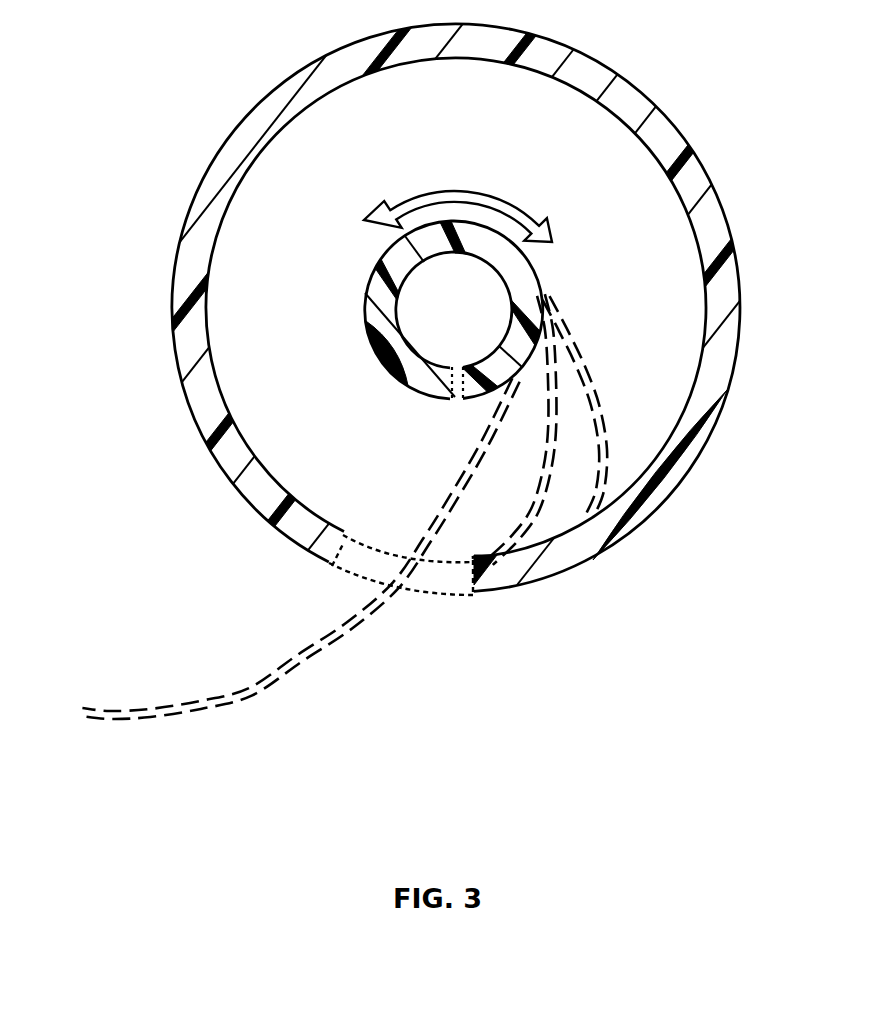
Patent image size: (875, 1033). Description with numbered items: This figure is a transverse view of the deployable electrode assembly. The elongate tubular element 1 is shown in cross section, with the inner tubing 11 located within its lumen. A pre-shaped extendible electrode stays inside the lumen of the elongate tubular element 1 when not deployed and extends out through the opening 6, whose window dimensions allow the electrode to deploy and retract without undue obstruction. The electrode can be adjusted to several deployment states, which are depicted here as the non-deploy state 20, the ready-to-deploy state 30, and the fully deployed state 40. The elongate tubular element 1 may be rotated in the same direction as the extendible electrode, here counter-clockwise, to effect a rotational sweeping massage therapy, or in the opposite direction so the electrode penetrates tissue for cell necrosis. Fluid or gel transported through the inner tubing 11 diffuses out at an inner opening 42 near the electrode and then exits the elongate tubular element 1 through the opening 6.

The elongate tubular element 1 is at (707, 168).
The opening 6 is at (448, 605).
The inner tubing 11 is at (560, 263).
The non-deploy state 20 is at (615, 447).
The ready-to-deploy state 30 is at (547, 510).
The fully deployed state 40 is at (360, 628).
The inner opening 42 is at (453, 410).